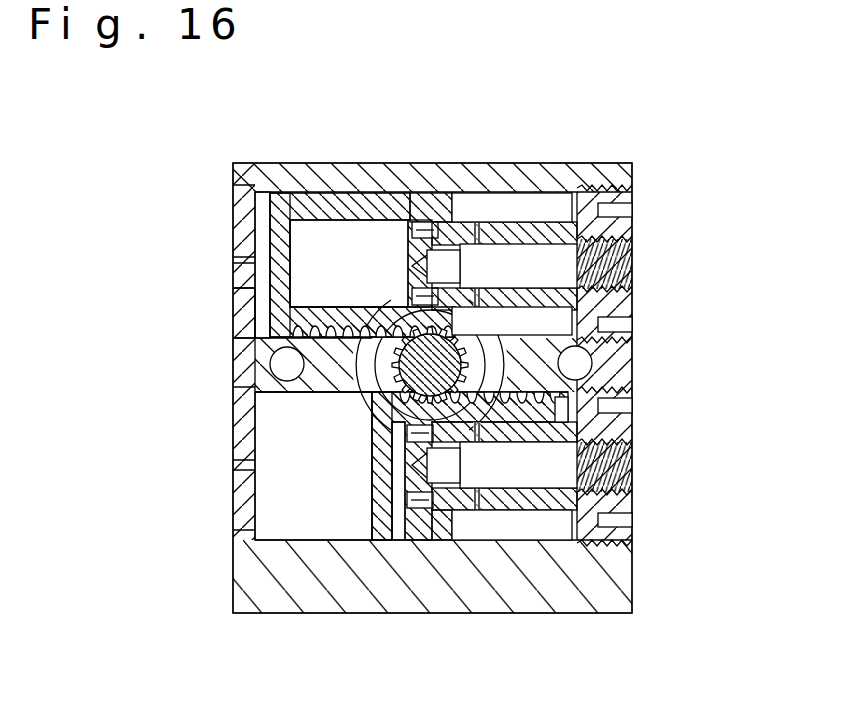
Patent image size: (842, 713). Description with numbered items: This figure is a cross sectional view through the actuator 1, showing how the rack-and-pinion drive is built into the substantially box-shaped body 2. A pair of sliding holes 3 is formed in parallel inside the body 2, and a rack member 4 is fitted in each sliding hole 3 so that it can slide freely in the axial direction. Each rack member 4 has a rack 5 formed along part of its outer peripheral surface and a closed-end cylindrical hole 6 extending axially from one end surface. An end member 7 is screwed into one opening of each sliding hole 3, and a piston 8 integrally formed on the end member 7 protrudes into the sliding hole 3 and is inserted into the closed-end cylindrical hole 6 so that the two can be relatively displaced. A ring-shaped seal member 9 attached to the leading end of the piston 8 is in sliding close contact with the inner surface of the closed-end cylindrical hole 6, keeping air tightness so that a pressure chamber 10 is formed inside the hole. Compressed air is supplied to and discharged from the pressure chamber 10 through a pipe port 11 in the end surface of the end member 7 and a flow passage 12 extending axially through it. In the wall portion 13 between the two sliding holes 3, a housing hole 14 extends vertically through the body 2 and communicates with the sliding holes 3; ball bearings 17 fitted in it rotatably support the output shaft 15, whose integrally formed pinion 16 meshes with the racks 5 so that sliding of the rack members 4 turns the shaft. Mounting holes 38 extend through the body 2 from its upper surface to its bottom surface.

The actuator 1 is at (214, 146).
The body 2 is at (605, 178).
The sliding hole 3 is at (258, 212).
The rack member 4 is at (278, 245).
The rack 5 is at (458, 235).
The closed-end cylindrical hole 6 is at (333, 258).
The end member 7 is at (620, 232).
The piston 8 is at (547, 200).
The seal member 9 is at (428, 226).
The pressure chamber 10 is at (372, 262).
The pipe port 11 is at (613, 266).
The flow passage 12 is at (513, 262).
The wall portion 13 is at (258, 316).
The housing hole 14 is at (365, 306).
The output shaft 15 is at (262, 398).
The pinion 16 is at (500, 342).
The ball bearing 17 is at (500, 385).
The mounting hole 38 is at (285, 364).